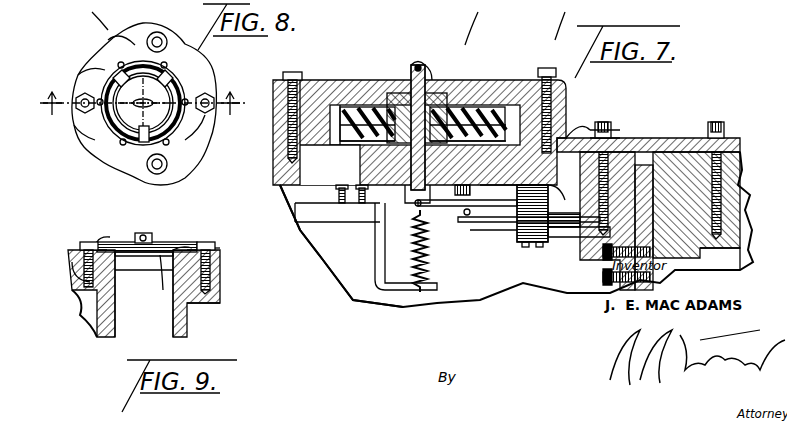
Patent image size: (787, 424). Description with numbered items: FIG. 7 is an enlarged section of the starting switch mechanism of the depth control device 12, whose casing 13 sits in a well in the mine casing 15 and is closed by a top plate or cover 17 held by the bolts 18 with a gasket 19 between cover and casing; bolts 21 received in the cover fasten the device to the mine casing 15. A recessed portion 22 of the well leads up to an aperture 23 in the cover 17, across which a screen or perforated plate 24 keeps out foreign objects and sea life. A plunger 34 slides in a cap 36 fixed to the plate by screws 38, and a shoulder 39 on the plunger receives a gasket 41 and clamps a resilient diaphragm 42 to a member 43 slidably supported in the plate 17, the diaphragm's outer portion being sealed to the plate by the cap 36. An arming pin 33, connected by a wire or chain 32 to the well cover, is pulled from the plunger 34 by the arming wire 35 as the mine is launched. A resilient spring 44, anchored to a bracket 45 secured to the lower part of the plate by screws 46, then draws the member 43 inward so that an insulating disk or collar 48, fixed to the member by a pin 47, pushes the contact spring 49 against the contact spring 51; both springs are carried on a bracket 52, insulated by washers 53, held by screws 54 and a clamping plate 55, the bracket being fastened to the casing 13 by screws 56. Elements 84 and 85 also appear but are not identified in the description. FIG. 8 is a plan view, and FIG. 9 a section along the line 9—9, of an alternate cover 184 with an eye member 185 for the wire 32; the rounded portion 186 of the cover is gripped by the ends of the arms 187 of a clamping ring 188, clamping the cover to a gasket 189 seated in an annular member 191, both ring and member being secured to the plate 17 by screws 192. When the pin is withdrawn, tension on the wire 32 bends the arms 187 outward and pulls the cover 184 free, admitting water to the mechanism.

In FIG. 8, the section line 9 is at (141, 111).
In FIG. 7, the depth control device 12 is at (372, 302).
In FIG. 7, the casing 13 is at (605, 288).
In FIG. 7, the mine casing 15 is at (755, 232).
In FIG. 9, the mine casing 15 is at (222, 300).
In FIG. 8, the top plate or cover 17 is at (199, 160).
In FIG. 7, the top plate or cover 17 is at (668, 142).
In FIG. 9, the top plate or cover 17 is at (222, 255).
In FIG. 8, the bolts 18 is at (70, 88).
In FIG. 7, the bolts 18 is at (603, 120).
In FIG. 9, the bolts 18 is at (70, 270).
In FIG. 7, the gasket 19 is at (628, 135).
In FIG. 9, the gasket 19 is at (80, 262).
In FIG. 8, the bolts 21 is at (218, 90).
In FIG. 7, the bolts 21 is at (724, 125).
In FIG. 9, the bolts 21 is at (225, 252).
In FIG. 9, the recessed portion 22 is at (144, 294).
In FIG. 9, the aperture 23 is at (145, 260).
In FIG. 9, the screen or perforated plate 24 is at (163, 281).
In FIG. 8, the wire or chain 32 is at (95, 78).
In FIG. 9, the wire or chain 32 is at (110, 230).
In FIG. 7, the arming pin 33 is at (411, 75).
In FIG. 7, the plunger 34 is at (432, 80).
In FIG. 7, the arming wire 35 is at (418, 58).
In FIG. 7, the cap 36 is at (485, 95).
In FIG. 7, the screws 38 is at (304, 72).
In FIG. 7, the shoulder 39 is at (445, 95).
In FIG. 7, the gasket 41 is at (372, 100).
In FIG. 7, the resilient diaphragm 42 is at (510, 105).
In FIG. 7, the member 43 is at (505, 178).
In FIG. 7, the resilient spring 44 is at (432, 245).
In FIG. 7, the bracket 45 is at (375, 258).
In FIG. 7, the screws 46 is at (358, 203).
In FIG. 7, the pin 47 is at (410, 196).
In FIG. 7, the disk or collar 48 is at (467, 191).
In FIG. 7, the contact spring 49 is at (462, 210).
In FIG. 7, the contact spring 51 is at (468, 222).
In FIG. 7, the bracket 52 is at (565, 237).
In FIG. 7, the insulating washers 53 is at (517, 228).
In FIG. 7, the screws 54 is at (525, 248).
In FIG. 7, the clamping plate 55 is at (568, 138).
In FIG. 7, the screws 56 is at (603, 270).
In FIG. 7, the shaft 84 is at (566, 20).
In FIG. 8, the shaft 85 is at (89, 15).
In FIG. 7, the shaft 85 is at (476, 22).
In FIG. 8, the cover 184 is at (136, 55).
In FIG. 9, the cover 184 is at (120, 242).
In FIG. 8, the eye member 185 is at (143, 103).
In FIG. 9, the eye member 185 is at (160, 248).
In FIG. 8, the rounded portion 186 is at (110, 125).
In FIG. 9, the rounded portion 186 is at (182, 245).
In FIG. 8, the arms 187 is at (110, 70).
In FIG. 9, the arms 187 is at (138, 233).
In FIG. 8, the clamping ring 188 is at (190, 135).
In FIG. 9, the clamping ring 188 is at (205, 245).
In FIG. 9, the gasket 189 is at (92, 245).
In FIG. 9, the annular member 191 is at (212, 248).
In FIG. 8, the screws 192 is at (118, 62).
In FIG. 9, the screws 192 is at (200, 245).